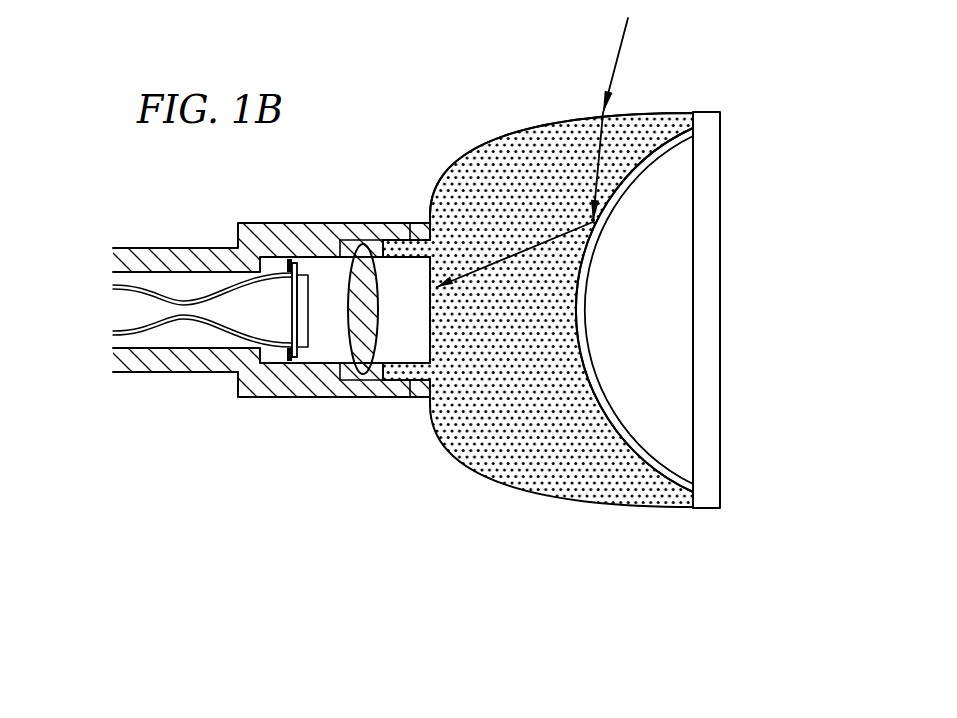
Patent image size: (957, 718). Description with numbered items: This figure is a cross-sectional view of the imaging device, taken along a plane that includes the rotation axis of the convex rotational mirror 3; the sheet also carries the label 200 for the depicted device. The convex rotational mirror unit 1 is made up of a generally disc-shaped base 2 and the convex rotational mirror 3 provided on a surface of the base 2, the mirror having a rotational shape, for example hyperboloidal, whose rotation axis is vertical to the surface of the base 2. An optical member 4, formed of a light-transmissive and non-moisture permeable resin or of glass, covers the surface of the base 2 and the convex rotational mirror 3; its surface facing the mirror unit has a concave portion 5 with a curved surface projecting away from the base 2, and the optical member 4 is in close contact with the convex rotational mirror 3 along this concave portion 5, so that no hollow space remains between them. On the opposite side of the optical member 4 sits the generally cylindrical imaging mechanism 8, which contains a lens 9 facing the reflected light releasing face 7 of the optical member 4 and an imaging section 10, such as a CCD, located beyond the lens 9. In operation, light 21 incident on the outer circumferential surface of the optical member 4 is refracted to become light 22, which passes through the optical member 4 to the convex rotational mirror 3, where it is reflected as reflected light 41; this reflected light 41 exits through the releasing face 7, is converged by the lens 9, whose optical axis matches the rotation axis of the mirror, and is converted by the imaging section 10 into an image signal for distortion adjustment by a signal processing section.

The optical device 200 is at (612, 324).
The convex rotational mirror unit 1 is at (650, 373).
The base 2 is at (710, 510).
The convex rotational mirror 3 is at (660, 420).
The optical member 4 is at (538, 338).
The reflected light 41 is at (508, 248).
The concave portion 5 is at (618, 197).
The reflected light releasing face 7 is at (425, 307).
The imaging mechanism 8 is at (303, 368).
The lens 9 is at (350, 335).
The imaging section 10 is at (293, 300).
The light 21 is at (622, 38).
The light 22 is at (592, 160).